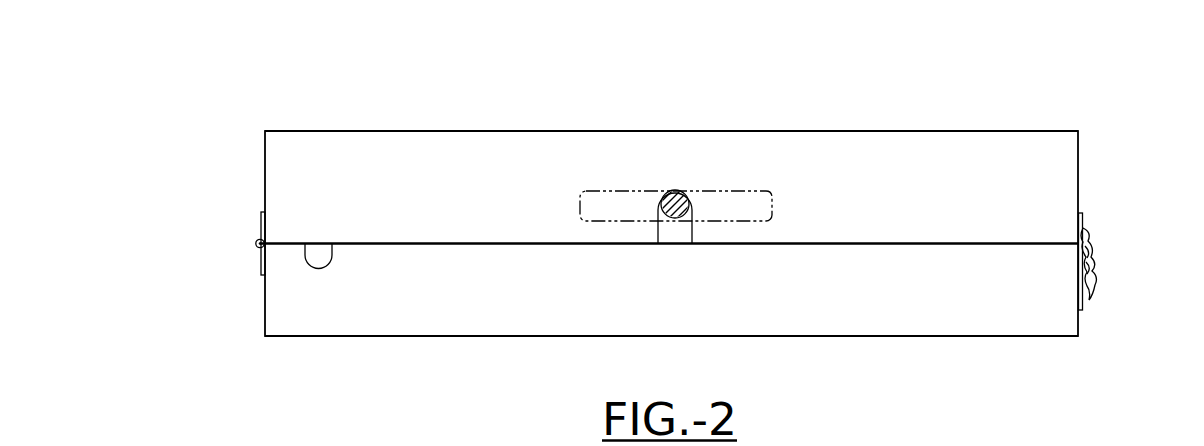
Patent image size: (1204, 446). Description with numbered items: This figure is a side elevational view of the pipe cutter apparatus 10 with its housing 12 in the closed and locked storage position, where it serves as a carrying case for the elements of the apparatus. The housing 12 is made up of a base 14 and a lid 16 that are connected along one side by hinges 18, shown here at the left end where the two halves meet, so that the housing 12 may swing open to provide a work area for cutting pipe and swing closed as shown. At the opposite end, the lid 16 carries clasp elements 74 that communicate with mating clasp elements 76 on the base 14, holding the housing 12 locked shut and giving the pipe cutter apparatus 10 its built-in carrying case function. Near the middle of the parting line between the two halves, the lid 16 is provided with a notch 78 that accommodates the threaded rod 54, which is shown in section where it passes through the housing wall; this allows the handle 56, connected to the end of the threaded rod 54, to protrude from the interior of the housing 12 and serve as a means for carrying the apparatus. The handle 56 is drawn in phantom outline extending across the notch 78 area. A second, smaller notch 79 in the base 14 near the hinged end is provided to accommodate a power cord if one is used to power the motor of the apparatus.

The pipe cutter apparatus 10 is at (400, 100).
The housing 12 is at (722, 120).
The base 14 is at (1005, 346).
The lid 16 is at (995, 122).
The hinges 18 is at (257, 246).
The threaded rod 54 is at (675, 192).
The handle 56 is at (760, 191).
The clasp elements 74 is at (1083, 218).
The mating clasp elements 76 is at (1091, 282).
The notch 78 is at (688, 222).
The notch 79 is at (325, 265).